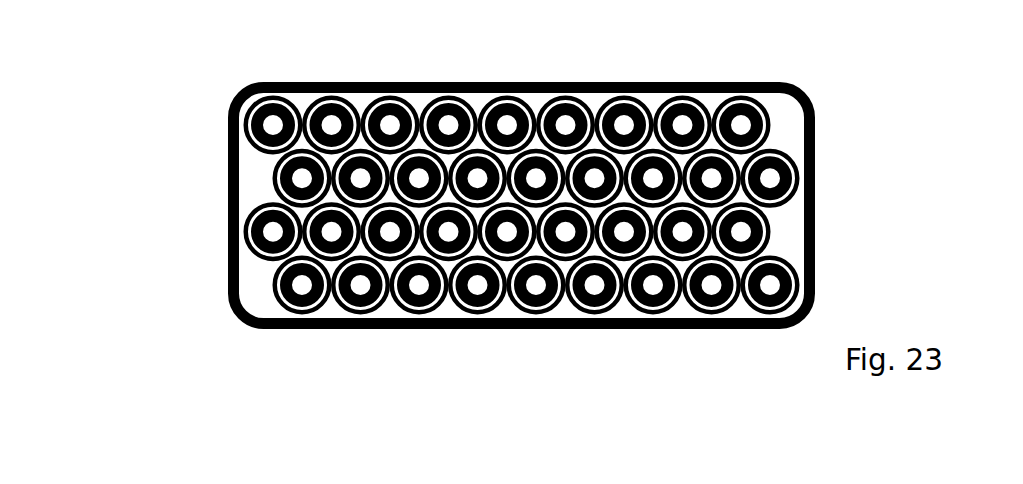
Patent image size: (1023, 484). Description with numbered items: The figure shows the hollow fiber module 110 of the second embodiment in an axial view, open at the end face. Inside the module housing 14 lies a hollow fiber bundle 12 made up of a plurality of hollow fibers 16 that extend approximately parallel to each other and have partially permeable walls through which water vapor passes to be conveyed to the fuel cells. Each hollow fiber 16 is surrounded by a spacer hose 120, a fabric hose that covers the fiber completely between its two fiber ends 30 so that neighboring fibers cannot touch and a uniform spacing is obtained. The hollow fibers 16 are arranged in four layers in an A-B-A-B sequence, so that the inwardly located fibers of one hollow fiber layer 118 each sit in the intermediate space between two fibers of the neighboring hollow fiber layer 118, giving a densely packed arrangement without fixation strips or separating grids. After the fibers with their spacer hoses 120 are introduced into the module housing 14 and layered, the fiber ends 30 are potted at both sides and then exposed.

The hollow fiber module 110 is at (533, 201).
The spacer hose 120 is at (308, 105).
The hollow fiber 16 is at (563, 201).
The fiber end 30 is at (447, 107).
The hollow fiber layer 118 is at (785, 123).
The hollow fiber bundle 12 is at (258, 176).
The module housing 14 is at (232, 270).